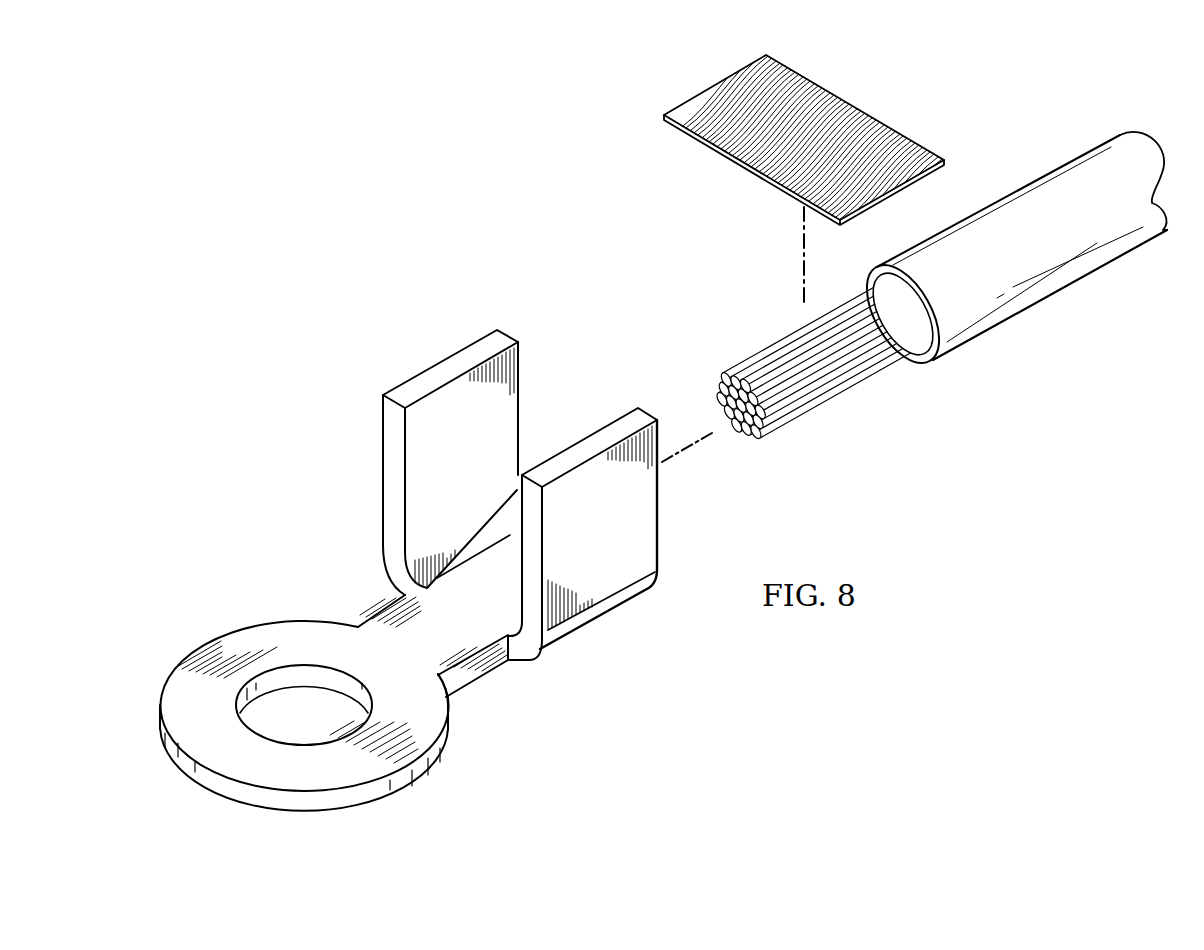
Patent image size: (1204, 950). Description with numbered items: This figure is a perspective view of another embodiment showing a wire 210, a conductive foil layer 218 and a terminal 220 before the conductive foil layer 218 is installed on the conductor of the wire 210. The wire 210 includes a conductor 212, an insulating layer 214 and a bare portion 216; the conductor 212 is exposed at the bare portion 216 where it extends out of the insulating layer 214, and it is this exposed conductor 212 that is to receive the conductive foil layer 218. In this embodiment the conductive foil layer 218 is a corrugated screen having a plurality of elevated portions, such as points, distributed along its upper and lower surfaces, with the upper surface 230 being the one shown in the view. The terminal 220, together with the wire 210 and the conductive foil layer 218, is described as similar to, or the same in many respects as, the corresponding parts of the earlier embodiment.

The wire 210 is at (937, 286).
The conductor 212 is at (740, 362).
The insulating layer 214 is at (1045, 301).
The bare portion 216 is at (809, 352).
The conductive foil layer 218 is at (804, 140).
The terminal 220 is at (243, 635).
The upper surface 230 is at (713, 93).